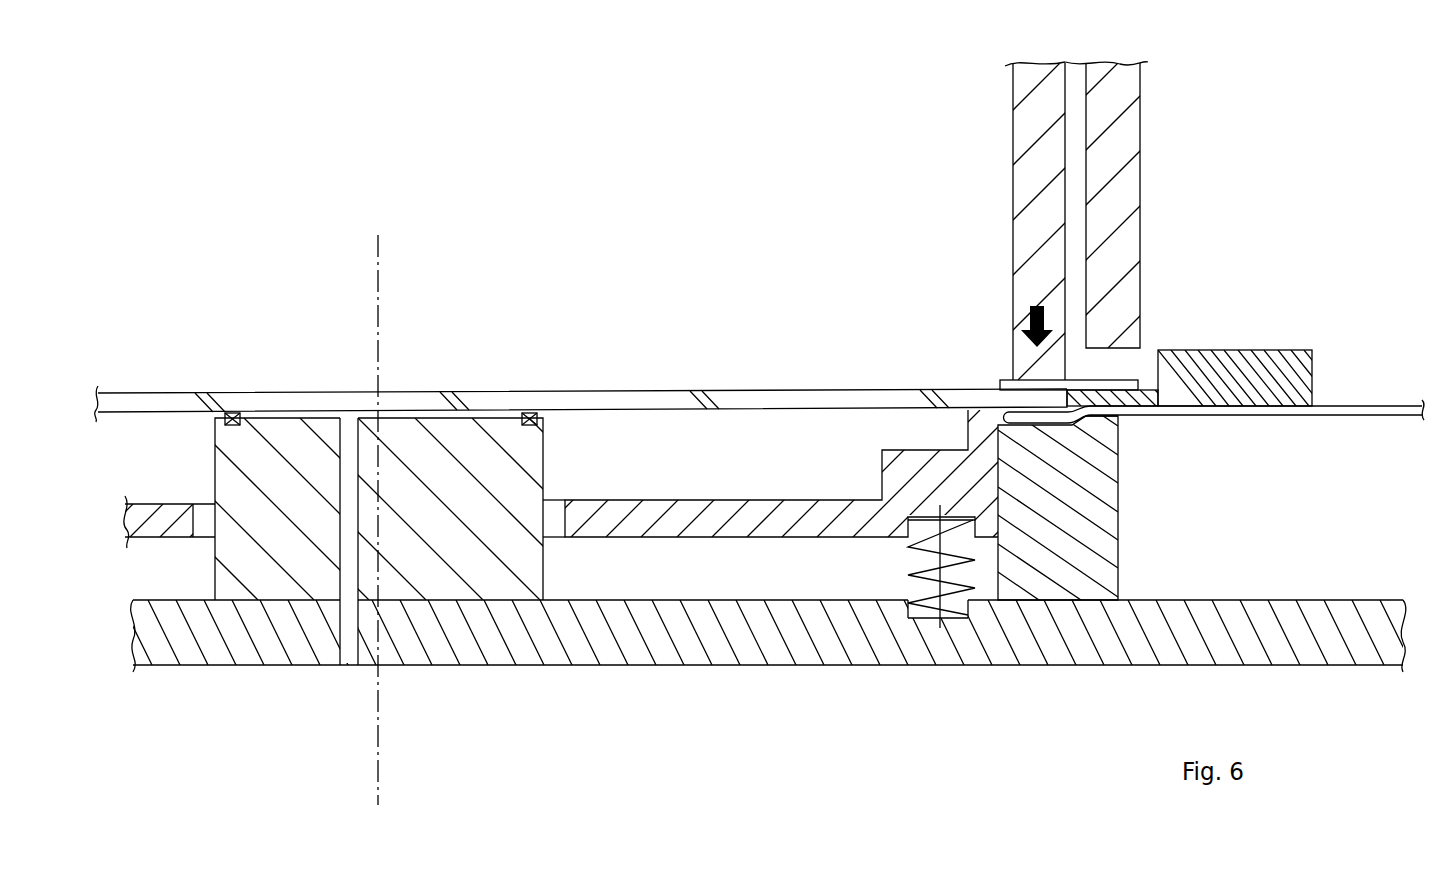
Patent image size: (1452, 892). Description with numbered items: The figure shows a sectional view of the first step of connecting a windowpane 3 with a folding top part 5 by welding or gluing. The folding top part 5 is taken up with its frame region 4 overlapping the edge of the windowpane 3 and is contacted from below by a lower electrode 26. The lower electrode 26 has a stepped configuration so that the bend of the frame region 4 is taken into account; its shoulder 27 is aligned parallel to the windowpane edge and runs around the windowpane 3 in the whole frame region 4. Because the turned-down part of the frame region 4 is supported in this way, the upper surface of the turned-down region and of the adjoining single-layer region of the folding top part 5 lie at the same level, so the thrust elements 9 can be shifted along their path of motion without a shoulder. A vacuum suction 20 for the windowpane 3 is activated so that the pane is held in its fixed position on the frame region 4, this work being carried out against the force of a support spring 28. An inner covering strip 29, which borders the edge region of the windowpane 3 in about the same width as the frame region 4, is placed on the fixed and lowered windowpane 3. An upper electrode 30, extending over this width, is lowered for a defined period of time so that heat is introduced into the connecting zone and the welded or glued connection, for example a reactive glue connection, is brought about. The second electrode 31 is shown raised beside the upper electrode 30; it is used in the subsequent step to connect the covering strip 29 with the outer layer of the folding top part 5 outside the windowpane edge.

The windowpane 3 is at (732, 399).
The frame region 4 is at (1044, 432).
The folding top part 5 is at (1300, 411).
The thrust elements 9 is at (1272, 362).
The vacuum suction 20 is at (350, 447).
The lower electrode 26 is at (1100, 428).
The shoulder 27 is at (1079, 432).
The support spring 28 is at (928, 579).
The inner covering strip 29 is at (1018, 388).
The upper electrode 30 is at (1027, 235).
The second electrode 31 is at (1125, 180).